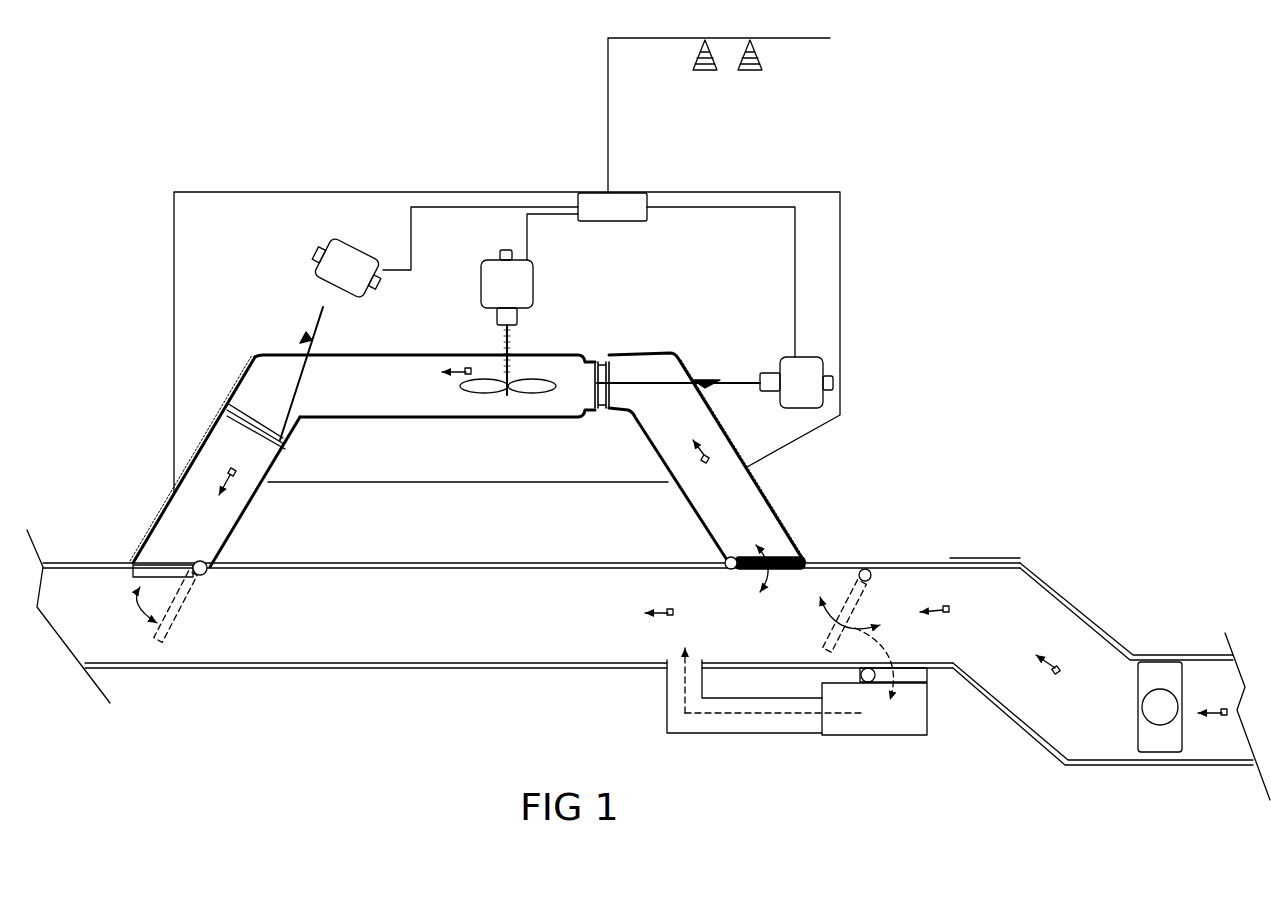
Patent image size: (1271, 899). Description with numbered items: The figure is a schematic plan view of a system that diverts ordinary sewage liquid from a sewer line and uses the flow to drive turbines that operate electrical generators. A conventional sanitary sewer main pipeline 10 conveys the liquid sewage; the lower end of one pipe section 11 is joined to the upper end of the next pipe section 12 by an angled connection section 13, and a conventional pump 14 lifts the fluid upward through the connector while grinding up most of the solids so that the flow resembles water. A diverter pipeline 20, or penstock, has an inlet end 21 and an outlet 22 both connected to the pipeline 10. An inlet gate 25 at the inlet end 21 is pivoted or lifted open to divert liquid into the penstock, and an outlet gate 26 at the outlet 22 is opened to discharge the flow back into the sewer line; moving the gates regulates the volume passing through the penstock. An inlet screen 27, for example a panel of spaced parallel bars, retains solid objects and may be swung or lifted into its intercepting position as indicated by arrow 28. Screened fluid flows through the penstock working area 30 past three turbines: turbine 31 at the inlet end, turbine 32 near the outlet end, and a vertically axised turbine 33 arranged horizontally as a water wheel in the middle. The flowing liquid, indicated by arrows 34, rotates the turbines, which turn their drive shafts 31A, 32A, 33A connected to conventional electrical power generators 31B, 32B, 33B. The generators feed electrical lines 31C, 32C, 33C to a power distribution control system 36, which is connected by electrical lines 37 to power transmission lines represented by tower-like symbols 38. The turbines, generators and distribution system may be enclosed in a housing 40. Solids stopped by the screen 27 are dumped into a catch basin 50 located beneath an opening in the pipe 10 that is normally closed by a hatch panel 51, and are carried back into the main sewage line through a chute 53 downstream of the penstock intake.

The sanitary sewer main pipeline 10 is at (490, 668).
The pipe section 11 is at (1234, 763).
The next pipe section 12 is at (955, 559).
The angled connection section 13 is at (1080, 607).
The pump 14 is at (1152, 672).
The diverter pipeline 20 is at (679, 506).
The inlet end 21 is at (752, 508).
The outlet 22 is at (222, 575).
The inlet gate 25 is at (785, 548).
The outlet gate 26 is at (128, 587).
The inlet screen 27 is at (867, 569).
The arrow 28 is at (880, 624).
The penstock working area 30 is at (380, 418).
The turbine 31 is at (608, 408).
The drive shaft 31A is at (683, 387).
The electrical power generator 31B is at (768, 369).
The electrical line 31C is at (784, 245).
The turbine 32 is at (285, 442).
The drive shaft 32A is at (266, 390).
The electrical power generator 32B is at (316, 294).
The electrical line 32C is at (409, 233).
The vertically axised turbine 33 is at (537, 376).
The drive shaft 33A is at (504, 341).
The electrical power generator 33B is at (478, 273).
The electrical line 33C is at (516, 235).
The arrows 34 is at (205, 460).
The power distribution control system 36 is at (604, 221).
The electrical lines 37 is at (599, 127).
The tower-like symbols 38 is at (684, 72).
The housing 40 is at (520, 483).
The catch basin 50 is at (880, 735).
The hatch panel 51 is at (917, 672).
The chute 53 is at (762, 733).